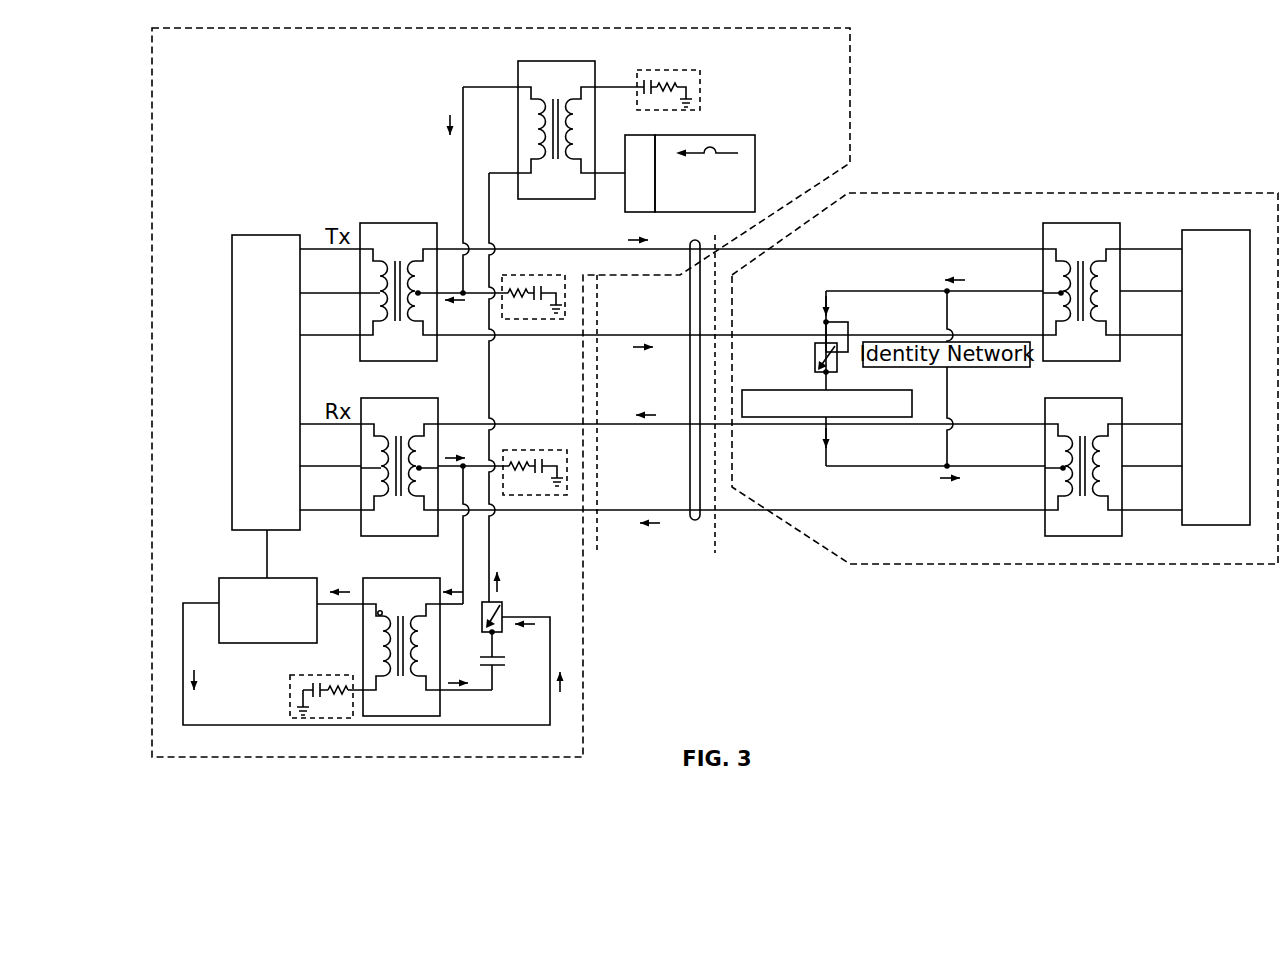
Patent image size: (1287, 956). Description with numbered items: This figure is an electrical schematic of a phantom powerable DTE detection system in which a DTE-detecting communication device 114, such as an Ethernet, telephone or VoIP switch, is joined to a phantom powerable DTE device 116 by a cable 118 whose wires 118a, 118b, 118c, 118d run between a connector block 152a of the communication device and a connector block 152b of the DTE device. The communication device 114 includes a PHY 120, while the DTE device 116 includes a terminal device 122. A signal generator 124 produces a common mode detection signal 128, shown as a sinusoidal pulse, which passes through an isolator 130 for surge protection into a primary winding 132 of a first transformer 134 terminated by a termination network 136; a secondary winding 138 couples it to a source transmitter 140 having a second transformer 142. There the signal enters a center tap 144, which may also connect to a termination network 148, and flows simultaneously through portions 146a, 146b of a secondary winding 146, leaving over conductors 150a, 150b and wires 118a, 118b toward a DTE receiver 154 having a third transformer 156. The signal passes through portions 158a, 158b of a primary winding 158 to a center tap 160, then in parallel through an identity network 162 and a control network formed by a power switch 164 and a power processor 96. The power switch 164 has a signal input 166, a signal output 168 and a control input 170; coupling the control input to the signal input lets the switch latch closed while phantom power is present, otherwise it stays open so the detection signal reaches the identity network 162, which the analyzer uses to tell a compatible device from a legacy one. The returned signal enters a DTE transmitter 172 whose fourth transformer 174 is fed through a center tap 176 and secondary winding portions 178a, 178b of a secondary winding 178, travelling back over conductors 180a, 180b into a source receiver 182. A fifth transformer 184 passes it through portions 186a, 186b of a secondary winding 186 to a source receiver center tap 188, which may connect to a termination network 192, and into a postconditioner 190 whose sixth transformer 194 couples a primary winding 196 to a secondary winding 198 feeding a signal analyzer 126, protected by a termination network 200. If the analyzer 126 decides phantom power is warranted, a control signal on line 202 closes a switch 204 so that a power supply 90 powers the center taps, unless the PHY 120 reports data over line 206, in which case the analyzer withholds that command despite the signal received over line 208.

The power supply 90 is at (500, 668).
The power processor 96 is at (912, 401).
The DTE-detecting communication device 114 is at (851, 103).
The phantom powerable DTE device 116 is at (1233, 191).
The cable 118 is at (695, 522).
The wire 118a is at (606, 253).
The wire 118b is at (606, 333).
The wire 118c is at (606, 426).
The wire 118d is at (607, 509).
The PHY 120 is at (249, 415).
The terminal device 122 is at (1199, 389).
The signal generator 124 is at (755, 175).
The signal analyzer 126 is at (248, 578).
The detection signal 128 is at (711, 147).
The isolator 130 is at (645, 213).
The primary winding 132 is at (380, 293).
The first transformer 134 is at (556, 90).
The termination network 136 is at (668, 70).
The secondary winding 138 is at (537, 165).
The source transmitter 140 is at (398, 250).
The second transformer 142 is at (400, 224).
The center tap 144 is at (420, 294).
The secondary winding 146 is at (407, 300).
The secondary winding portion 146a is at (412, 268).
The secondary winding portion 146b is at (404, 350).
The termination network 148 is at (518, 275).
The conductor 150a is at (512, 248).
The conductor 150b is at (498, 338).
The connector block 152a is at (599, 562).
The connector block 152b is at (717, 562).
The DTE receiver 154 is at (1082, 249).
The third transformer 156 is at (1097, 229).
The primary winding 158 is at (1058, 318).
The primary winding portion 158a is at (1053, 249).
The primary winding portion 158b is at (1066, 320).
The center tap 160 is at (1060, 288).
The identity network 162 is at (1053, 335).
The power switch 164 is at (816, 357).
The signal input 166 is at (824, 321).
The signal output 168 is at (824, 373).
The control input 170 is at (846, 333).
The DTE transmitter 172 is at (1090, 397).
The fourth transformer 174 is at (1083, 508).
The center tap 176 is at (1061, 464).
The secondary winding 178 is at (1068, 492).
The secondary winding portion 178a is at (1056, 423).
The secondary winding portion 178b is at (1063, 521).
The conductor 180a is at (856, 429).
The conductor 180b is at (857, 509).
The source receiver 182 is at (428, 400).
The fifth transformer 184 is at (397, 424).
The secondary winding 186 is at (407, 480).
The secondary winding portion 186a is at (422, 436).
The secondary winding portion 186b is at (404, 522).
The source receiver center tap 188 is at (423, 465).
The postconditioner 190 is at (420, 578).
The termination network 192 is at (557, 452).
The sixth transformer 194 is at (398, 604).
The primary winding 196 is at (425, 614).
The secondary winding 198 is at (380, 616).
The termination network 200 is at (305, 676).
The line 202 is at (183, 687).
The switch 204 is at (482, 619).
The line 206 is at (267, 556).
The line 208 is at (318, 604).